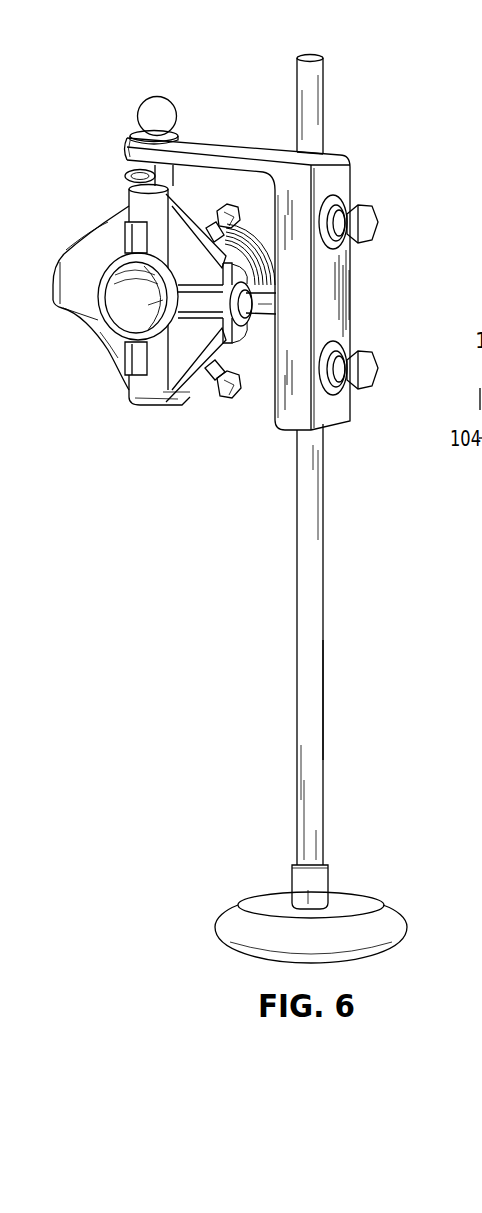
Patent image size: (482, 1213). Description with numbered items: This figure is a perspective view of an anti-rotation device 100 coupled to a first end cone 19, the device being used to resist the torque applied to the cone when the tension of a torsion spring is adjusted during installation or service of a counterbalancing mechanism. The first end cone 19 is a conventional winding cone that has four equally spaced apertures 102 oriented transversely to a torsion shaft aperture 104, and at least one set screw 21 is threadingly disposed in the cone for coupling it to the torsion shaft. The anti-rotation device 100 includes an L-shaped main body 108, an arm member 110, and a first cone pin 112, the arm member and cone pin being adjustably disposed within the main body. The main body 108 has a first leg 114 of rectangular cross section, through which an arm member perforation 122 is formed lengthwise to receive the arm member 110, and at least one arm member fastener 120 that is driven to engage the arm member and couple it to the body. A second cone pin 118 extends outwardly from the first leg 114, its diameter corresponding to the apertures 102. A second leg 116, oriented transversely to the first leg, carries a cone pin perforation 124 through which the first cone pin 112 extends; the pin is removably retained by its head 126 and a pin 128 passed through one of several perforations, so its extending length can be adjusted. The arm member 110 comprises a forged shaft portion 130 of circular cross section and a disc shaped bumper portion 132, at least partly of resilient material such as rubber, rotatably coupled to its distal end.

The anti-rotation device 100 is at (158, 44).
The first end cone 19 is at (115, 232).
The set screw 21 is at (236, 207).
The apertures 102 is at (172, 191).
The torsion shaft aperture 104 is at (117, 308).
The main body 108 is at (365, 160).
The arm member 110 is at (336, 614).
The first cone pin 112 is at (179, 86).
The first leg 114 is at (351, 290).
The second leg 116 is at (256, 146).
The second cone pin 118 is at (258, 318).
The arm member fastener 120 is at (380, 224).
The arm member perforation 122 is at (318, 150).
The cone pin perforation 124 is at (130, 135).
The head 126 is at (148, 113).
The pin 128 is at (125, 176).
The shaft portion 130 is at (322, 699).
The bumper portion 132 is at (407, 926).